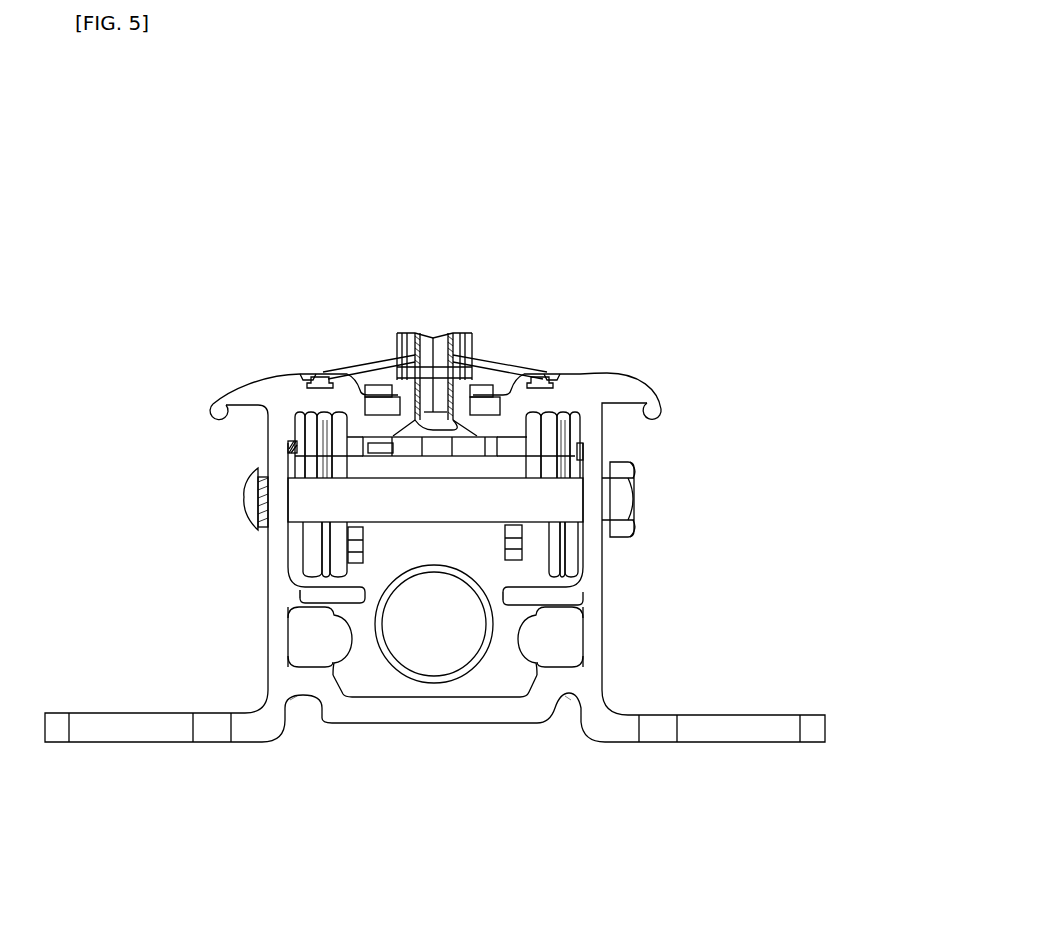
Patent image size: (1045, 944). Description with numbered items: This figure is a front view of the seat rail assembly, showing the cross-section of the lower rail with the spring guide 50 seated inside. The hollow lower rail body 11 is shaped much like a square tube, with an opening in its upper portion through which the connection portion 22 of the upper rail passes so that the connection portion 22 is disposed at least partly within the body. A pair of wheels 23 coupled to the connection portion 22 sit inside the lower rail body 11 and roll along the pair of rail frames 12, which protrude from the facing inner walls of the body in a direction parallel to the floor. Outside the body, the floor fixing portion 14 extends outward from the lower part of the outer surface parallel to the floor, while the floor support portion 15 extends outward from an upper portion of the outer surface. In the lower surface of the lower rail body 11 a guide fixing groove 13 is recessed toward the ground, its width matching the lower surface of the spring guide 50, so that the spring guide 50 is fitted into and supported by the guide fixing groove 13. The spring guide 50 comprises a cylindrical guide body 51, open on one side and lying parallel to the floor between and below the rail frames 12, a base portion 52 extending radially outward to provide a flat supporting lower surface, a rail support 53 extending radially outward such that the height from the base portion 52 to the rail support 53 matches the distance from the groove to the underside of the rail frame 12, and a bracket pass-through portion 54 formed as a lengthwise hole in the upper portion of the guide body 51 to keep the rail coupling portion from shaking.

The lower rail body 11 is at (292, 590).
The rail frame 12 is at (292, 606).
The guide fixing groove 13 is at (327, 703).
The floor fixing portion 14 is at (205, 727).
The floor support portion 15 is at (212, 406).
The connection portion 22 is at (475, 430).
The wheels 23 is at (550, 433).
The spring guide 50 is at (480, 627).
The guide body 51 is at (500, 598).
The base portion 52 is at (528, 677).
The rail support 53 is at (505, 622).
The bracket pass-through portion 54 is at (565, 582).